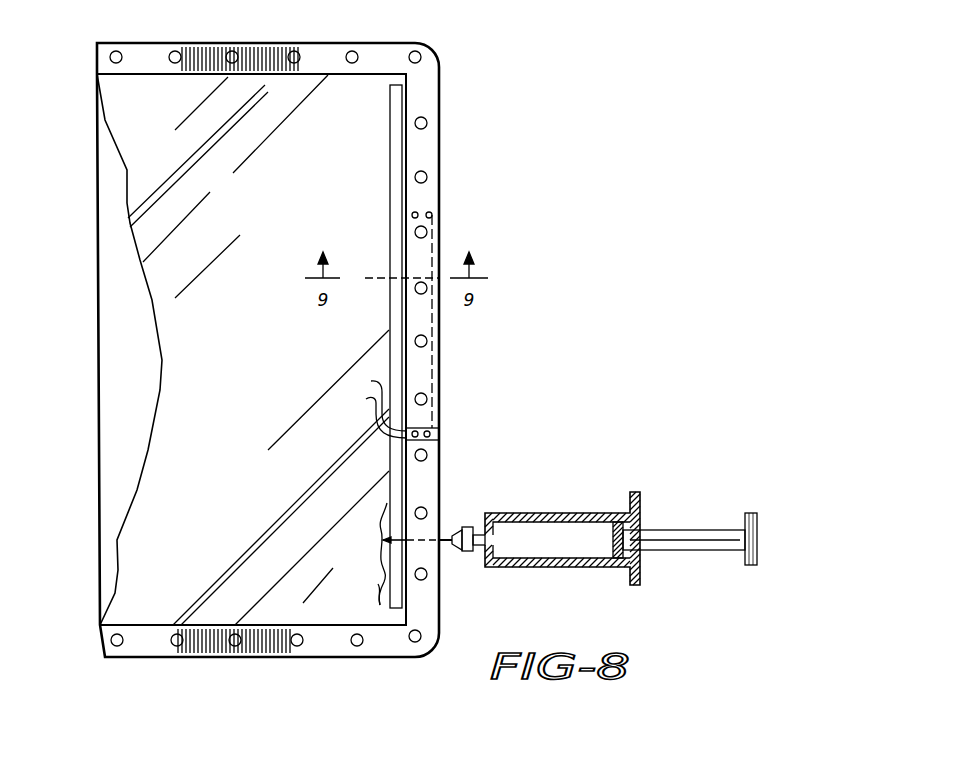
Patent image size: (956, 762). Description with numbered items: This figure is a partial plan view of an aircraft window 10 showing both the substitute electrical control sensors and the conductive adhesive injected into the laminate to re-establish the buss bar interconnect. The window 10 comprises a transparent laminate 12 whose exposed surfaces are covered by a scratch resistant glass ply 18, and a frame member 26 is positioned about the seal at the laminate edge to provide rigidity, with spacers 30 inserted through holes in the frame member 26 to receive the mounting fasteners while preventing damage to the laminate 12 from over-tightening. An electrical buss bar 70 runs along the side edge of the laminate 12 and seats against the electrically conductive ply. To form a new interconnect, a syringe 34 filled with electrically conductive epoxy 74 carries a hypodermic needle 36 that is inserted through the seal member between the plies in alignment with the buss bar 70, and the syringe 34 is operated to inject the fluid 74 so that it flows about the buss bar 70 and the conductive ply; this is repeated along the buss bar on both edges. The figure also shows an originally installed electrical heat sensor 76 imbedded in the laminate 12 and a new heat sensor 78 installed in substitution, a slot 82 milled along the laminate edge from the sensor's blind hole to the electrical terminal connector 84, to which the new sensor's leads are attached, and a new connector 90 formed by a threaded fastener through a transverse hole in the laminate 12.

The aircraft window 10 is at (524, 156).
The transparent laminate 12 is at (213, 193).
The scratch resistant ply 18 is at (264, 85).
The frame member 26 is at (440, 88).
The spacers 30 is at (352, 51).
The syringe 34 is at (566, 513).
The hypodermic needle 36 is at (454, 530).
The electrical buss bar 70 is at (385, 484).
The electrically conductive epoxy 74 is at (378, 584).
The electrical heat sensor 76 is at (371, 404).
The new heat sensor 78 is at (366, 283).
The slot 82 is at (441, 247).
The electrical terminal connector 84 is at (441, 431).
The new connector 90 is at (418, 212).